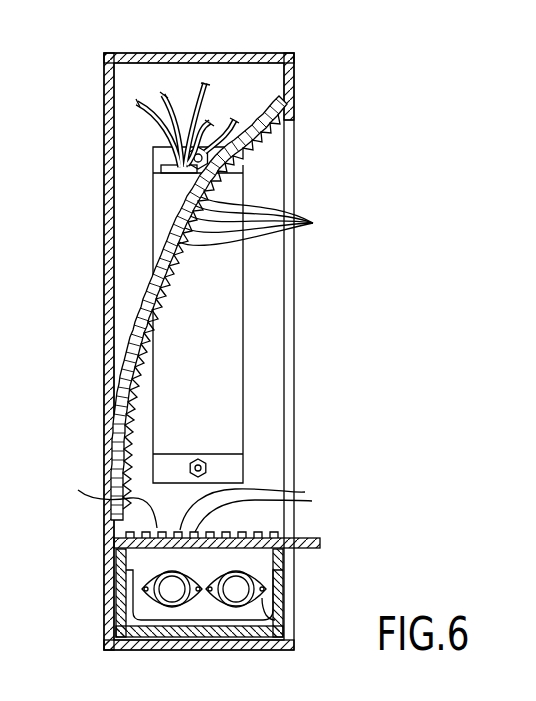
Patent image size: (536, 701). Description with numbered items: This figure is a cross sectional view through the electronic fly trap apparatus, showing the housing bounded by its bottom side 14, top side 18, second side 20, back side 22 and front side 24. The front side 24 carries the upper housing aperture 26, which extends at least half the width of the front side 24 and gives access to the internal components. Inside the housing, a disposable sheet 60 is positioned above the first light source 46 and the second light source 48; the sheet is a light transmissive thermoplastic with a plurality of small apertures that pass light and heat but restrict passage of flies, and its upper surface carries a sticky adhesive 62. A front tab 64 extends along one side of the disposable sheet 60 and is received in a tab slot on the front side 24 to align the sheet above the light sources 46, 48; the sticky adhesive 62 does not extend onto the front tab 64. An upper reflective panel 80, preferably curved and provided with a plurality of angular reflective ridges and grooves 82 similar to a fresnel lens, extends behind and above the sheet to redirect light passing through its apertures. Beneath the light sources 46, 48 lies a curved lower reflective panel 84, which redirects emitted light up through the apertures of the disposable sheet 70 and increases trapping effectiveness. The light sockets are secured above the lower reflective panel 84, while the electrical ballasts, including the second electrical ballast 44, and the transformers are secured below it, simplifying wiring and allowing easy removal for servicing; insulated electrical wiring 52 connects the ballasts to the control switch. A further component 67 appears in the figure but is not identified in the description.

The top side 18 is at (199, 53).
The back side 22 is at (105, 95).
The front side 24 is at (294, 70).
The upper housing aperture 26 is at (294, 280).
The bottom side 14 is at (228, 650).
The second electrical ballast 44 is at (243, 327).
The insulated electrical wiring 52 is at (133, 131).
The upper reflective panel 80 is at (284, 135).
The angular reflective ridges and grooves 82 is at (259, 228).
The front tab 64 is at (320, 540).
The second side 20 is at (248, 512).
The sticky adhesive 62 is at (305, 492).
The wire 67 is at (103, 497).
The second light source 48 is at (197, 603).
The first light source 46 is at (283, 563).
The lower reflective panel 84 is at (262, 600).
The disposable sheet 60 is at (210, 548).
The disposable sheet 70 is at (236, 589).